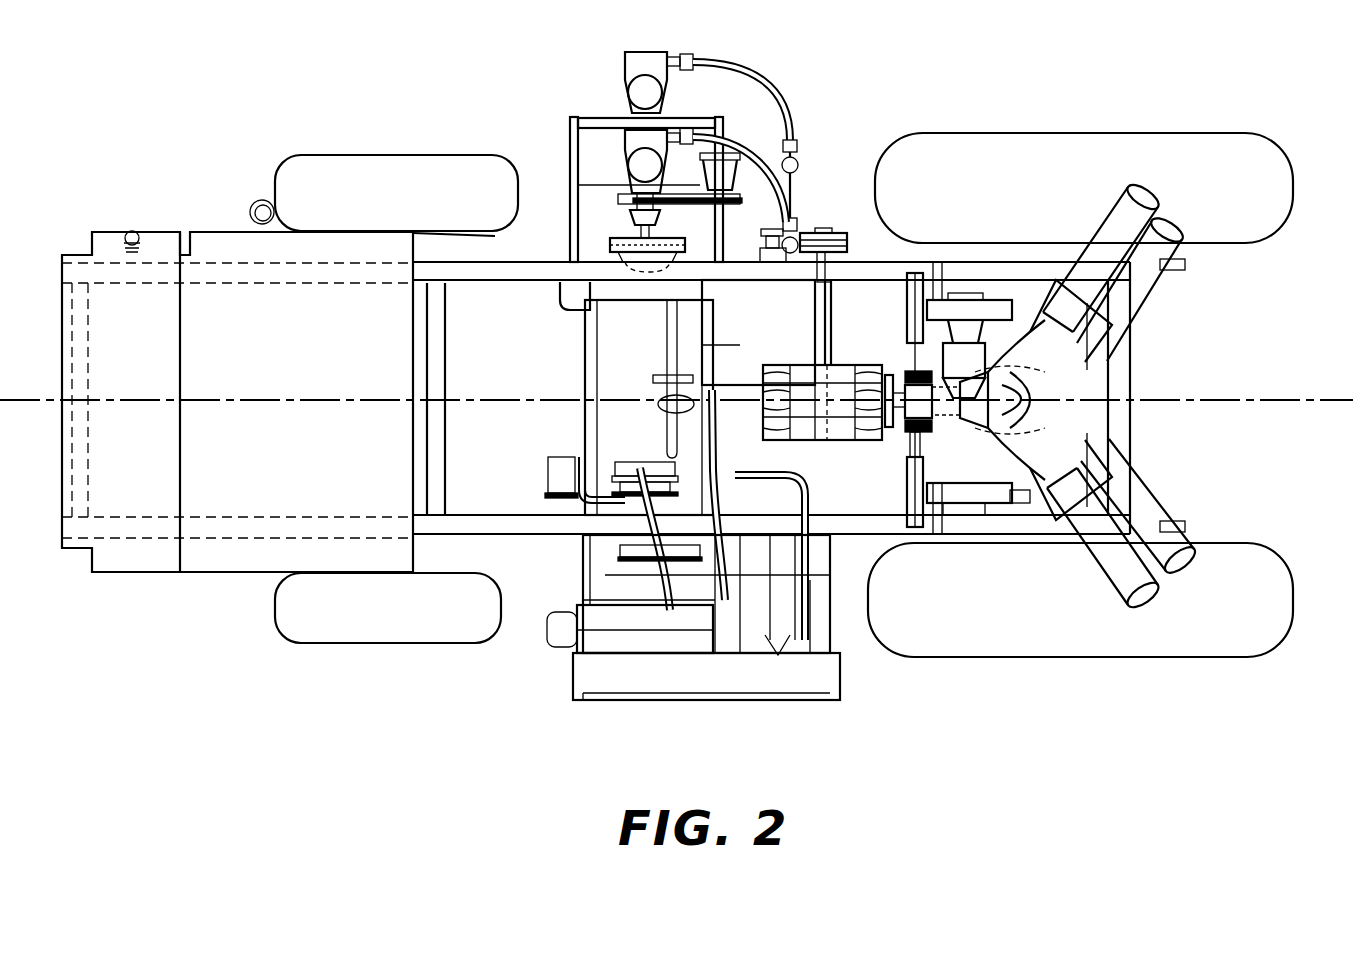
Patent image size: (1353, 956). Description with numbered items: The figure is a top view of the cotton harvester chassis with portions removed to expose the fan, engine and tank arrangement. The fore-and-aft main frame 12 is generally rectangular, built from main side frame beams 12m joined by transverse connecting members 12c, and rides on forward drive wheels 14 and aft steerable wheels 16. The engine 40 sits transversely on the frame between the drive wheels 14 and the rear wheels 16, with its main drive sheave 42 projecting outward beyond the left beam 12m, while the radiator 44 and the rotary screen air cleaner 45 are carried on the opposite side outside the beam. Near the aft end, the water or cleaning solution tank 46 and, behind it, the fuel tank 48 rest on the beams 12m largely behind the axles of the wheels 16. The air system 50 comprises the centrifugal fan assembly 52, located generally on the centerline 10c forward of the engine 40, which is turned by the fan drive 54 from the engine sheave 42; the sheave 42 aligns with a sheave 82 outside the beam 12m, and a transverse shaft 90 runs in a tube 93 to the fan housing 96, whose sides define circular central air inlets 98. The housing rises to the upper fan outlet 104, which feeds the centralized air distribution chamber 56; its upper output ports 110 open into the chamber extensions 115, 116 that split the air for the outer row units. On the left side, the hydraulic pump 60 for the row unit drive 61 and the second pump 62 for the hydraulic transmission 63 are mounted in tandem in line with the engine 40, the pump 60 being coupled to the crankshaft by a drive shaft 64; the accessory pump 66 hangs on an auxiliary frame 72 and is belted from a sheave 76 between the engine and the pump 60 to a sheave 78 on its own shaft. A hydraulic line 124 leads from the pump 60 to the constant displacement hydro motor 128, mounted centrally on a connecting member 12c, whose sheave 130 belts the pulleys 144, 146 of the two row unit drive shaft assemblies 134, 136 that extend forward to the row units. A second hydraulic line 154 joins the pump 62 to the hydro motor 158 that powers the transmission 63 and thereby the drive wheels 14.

The centerline 10c is at (1266, 392).
The main frame 12 is at (88, 550).
The transverse connecting members 12c is at (88, 352).
The main side frame beams 12m is at (560, 288).
The forward drive wheels 14 is at (1246, 133).
The aft steerable wheels 16 is at (390, 155).
The engine 40 is at (580, 408).
The main drive sheave 42 is at (610, 246).
The radiator 44 is at (600, 625).
The mechanical air cleaner 45 is at (598, 700).
The water or cleaning solution tank 46 is at (205, 232).
The fuel tank 48 is at (156, 232).
The air system 50 is at (842, 452).
The centrifugal fan assembly 52 is at (800, 358).
The fan drive 54 is at (828, 228).
The centralized air distribution chamber 56 is at (1040, 397).
The hydraulic pump 60 is at (630, 170).
The row unit drive 61 is at (889, 358).
The second pump 62 is at (625, 92).
The hydraulic transmission 63 is at (1068, 425).
The drive shaft 64 is at (660, 226).
The hydraulic accessory pump 66 is at (728, 140).
The auxiliary frame 72 is at (569, 102).
The sheave 76 is at (637, 210).
The sheave 78 is at (742, 203).
The sheave 82 is at (845, 240).
The transverse shaft 90 is at (833, 310).
The tube 93 is at (799, 284).
The fan housing 96 is at (763, 368).
The central air inlets 98 is at (800, 428).
The upper fan outlet 104 is at (891, 430).
The upper output ports 110 is at (1038, 416).
The chamber extension 115 is at (1082, 340).
The chamber extension 116 is at (1105, 506).
The hydraulic line 124 is at (795, 225).
The constant displacement hydro motor 128 is at (932, 430).
The sheave 130 is at (905, 462).
The row unit drive shaft assembly 134 is at (1005, 305).
The row unit drive shaft assembly 136 is at (985, 490).
The pulley 144 is at (915, 273).
The pulley 146 is at (912, 530).
The hydraulic line 154 is at (770, 80).
The constant displacement hydro motor 158 is at (968, 293).